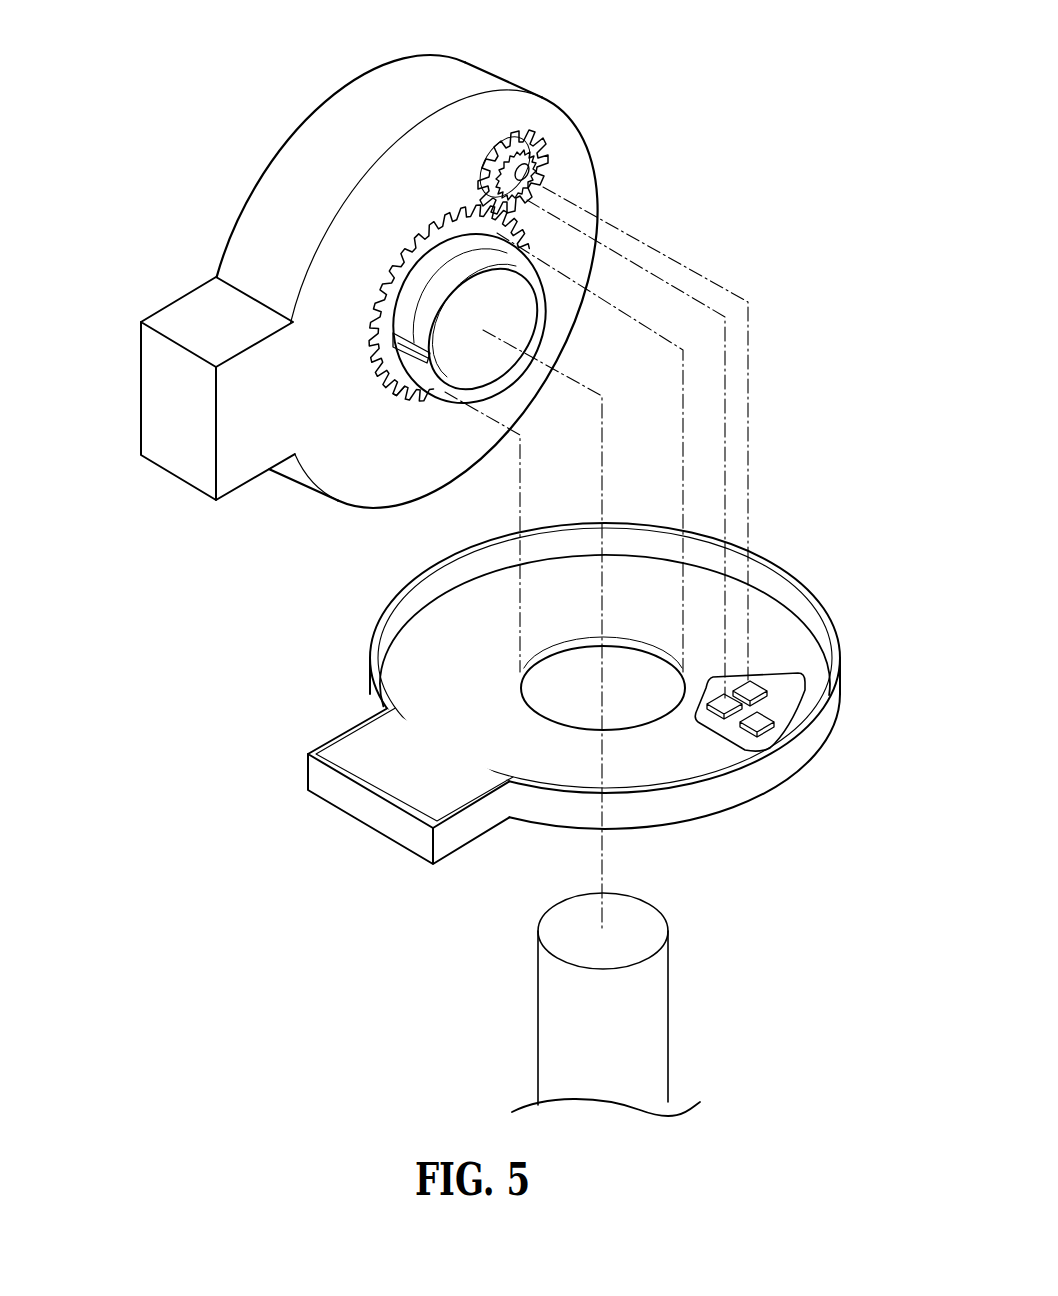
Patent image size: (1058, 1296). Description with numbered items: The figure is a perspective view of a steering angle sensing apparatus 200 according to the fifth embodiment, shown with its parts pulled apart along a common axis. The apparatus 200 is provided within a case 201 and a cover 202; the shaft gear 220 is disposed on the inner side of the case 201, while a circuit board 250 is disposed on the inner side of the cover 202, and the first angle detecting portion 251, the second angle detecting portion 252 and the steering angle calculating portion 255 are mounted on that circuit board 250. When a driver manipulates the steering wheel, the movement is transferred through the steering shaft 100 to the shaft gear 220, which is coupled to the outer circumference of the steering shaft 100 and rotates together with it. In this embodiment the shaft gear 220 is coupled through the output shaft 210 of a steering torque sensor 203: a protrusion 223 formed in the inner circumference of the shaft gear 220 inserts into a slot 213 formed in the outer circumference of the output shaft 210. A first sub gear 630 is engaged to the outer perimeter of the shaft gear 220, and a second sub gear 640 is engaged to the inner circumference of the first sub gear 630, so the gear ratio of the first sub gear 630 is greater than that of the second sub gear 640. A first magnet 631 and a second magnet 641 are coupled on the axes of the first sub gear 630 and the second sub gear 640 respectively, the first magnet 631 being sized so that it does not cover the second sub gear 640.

The steering shaft 100 is at (657, 1028).
The steering angle sensing apparatus 200 is at (634, 207).
The case 201 is at (160, 383).
The cover 202 is at (370, 808).
The steering torque sensor 203 is at (250, 178).
The output shaft 210 is at (540, 311).
The slot 213 is at (400, 386).
The shaft gear 220 is at (460, 207).
The protrusion 223 is at (397, 343).
The circuit board 250 is at (788, 698).
The first angle detecting portion 251 is at (707, 713).
The second angle detecting portion 252 is at (752, 683).
The steering angle calculating portion 255 is at (772, 723).
The first sub gear 630 is at (512, 131).
The first magnet 631 is at (484, 197).
The second sub gear 640 is at (540, 160).
The second magnet 641 is at (535, 172).